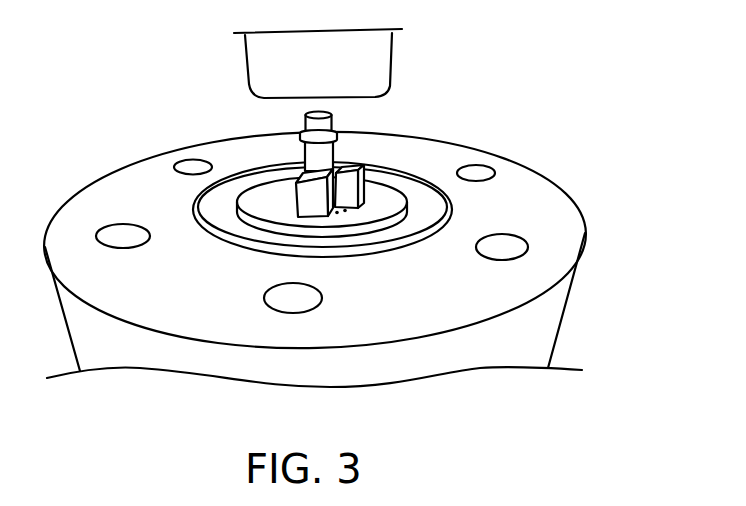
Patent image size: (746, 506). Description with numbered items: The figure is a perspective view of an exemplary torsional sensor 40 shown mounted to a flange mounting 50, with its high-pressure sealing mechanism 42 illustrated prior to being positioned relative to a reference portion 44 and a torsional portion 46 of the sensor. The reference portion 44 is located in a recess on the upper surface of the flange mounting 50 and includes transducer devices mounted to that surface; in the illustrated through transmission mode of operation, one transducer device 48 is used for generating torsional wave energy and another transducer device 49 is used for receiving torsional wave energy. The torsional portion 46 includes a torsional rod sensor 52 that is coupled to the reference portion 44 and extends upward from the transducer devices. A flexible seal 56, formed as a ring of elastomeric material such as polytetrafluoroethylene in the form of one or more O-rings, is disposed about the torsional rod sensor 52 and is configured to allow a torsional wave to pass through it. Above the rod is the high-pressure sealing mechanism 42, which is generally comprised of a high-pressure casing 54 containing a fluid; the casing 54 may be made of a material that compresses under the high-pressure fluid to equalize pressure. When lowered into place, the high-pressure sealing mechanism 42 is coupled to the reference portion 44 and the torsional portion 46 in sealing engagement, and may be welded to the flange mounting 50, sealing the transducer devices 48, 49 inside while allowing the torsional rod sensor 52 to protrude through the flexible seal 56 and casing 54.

The torsional sensor 40 is at (389, 250).
The high-pressure sealing mechanism 42 is at (310, 63).
The reference portion 44 is at (245, 172).
The torsional portion 46 is at (345, 129).
The transducer device 48 is at (310, 207).
The transducer device 49 is at (352, 200).
The flange mounting 50 is at (567, 262).
The torsional rod sensor 52 is at (327, 153).
The high-pressure casing 54 is at (373, 59).
The flexible seal 56 is at (300, 143).